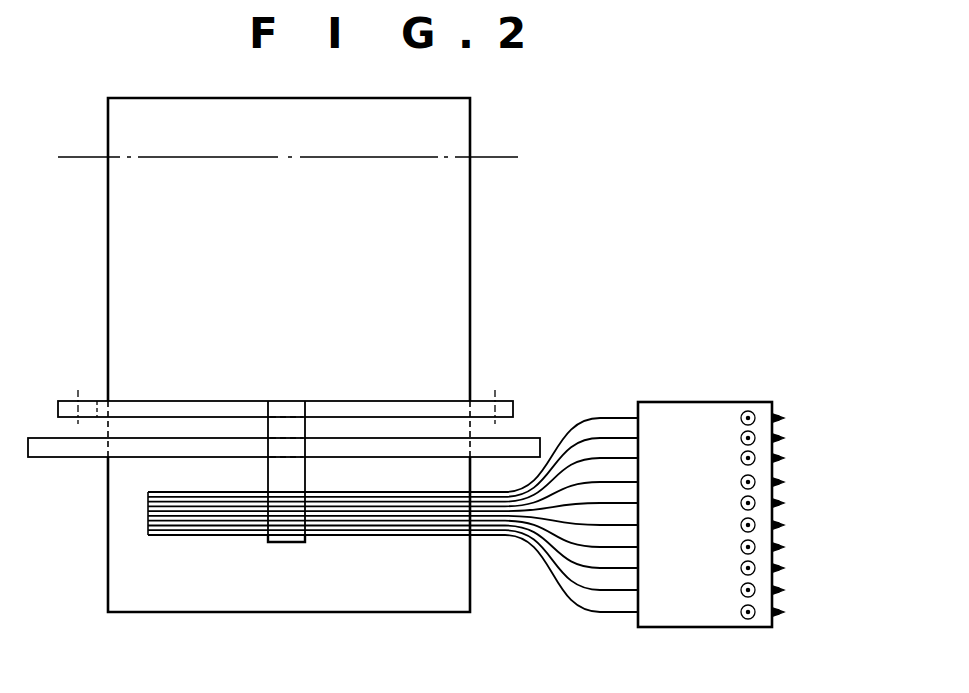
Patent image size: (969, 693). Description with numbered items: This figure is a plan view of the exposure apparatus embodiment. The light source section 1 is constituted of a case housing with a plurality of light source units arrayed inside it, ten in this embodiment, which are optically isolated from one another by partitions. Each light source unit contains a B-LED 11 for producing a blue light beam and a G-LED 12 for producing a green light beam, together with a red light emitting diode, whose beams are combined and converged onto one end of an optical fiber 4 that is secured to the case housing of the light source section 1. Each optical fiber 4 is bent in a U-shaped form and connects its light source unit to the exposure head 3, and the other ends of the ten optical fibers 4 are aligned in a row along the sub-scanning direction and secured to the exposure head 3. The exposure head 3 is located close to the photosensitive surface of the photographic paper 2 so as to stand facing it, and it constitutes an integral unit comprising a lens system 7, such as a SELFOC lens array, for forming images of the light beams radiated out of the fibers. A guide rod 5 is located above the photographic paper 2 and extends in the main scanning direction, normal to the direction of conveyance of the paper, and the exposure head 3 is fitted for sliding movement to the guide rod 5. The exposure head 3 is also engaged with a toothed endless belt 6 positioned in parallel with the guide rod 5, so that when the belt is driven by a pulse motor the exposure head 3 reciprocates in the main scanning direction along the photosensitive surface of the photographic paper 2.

The light source section 1 is at (687, 411).
The photographic paper 2 is at (459, 289).
The exposure head 3 is at (300, 477).
The optical fiber 4 is at (423, 532).
The guide rod 5 is at (523, 445).
The toothed endless belt 6 is at (411, 405).
The lens system 7 is at (310, 540).
The B-LED 11 is at (781, 460).
The G-LED 12 is at (741, 503).